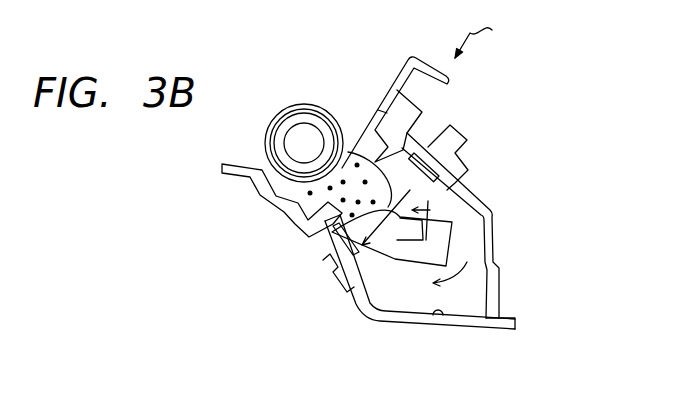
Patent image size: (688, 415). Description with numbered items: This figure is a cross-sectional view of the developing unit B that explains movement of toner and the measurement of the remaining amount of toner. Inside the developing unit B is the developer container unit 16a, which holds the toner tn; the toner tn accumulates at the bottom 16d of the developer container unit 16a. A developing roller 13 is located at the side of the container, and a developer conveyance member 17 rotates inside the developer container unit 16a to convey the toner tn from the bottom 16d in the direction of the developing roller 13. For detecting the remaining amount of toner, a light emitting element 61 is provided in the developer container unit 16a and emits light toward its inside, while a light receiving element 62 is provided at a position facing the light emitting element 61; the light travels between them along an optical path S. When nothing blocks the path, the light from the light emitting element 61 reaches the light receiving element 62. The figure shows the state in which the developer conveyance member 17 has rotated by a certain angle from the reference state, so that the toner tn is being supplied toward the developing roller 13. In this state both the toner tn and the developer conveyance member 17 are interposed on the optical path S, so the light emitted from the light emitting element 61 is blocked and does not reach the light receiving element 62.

The developing roller 13 is at (295, 108).
The developer container unit 16a is at (475, 270).
The bottom 16d is at (446, 312).
The developer conveyance member 17 is at (412, 241).
The light emitting element 61 is at (457, 135).
The light receiving element 62 is at (328, 267).
The optical path S is at (340, 233).
The toner tn is at (308, 193).
The developing unit B is at (480, 37).